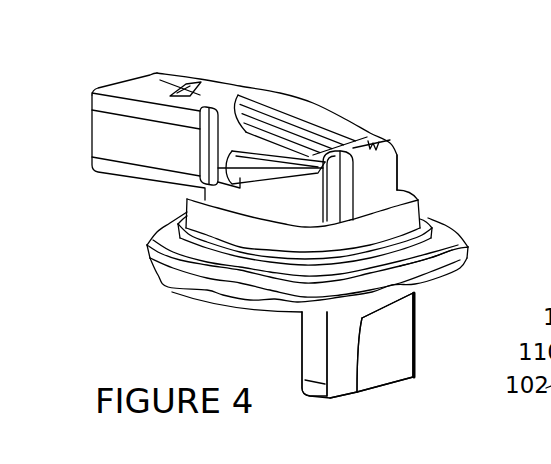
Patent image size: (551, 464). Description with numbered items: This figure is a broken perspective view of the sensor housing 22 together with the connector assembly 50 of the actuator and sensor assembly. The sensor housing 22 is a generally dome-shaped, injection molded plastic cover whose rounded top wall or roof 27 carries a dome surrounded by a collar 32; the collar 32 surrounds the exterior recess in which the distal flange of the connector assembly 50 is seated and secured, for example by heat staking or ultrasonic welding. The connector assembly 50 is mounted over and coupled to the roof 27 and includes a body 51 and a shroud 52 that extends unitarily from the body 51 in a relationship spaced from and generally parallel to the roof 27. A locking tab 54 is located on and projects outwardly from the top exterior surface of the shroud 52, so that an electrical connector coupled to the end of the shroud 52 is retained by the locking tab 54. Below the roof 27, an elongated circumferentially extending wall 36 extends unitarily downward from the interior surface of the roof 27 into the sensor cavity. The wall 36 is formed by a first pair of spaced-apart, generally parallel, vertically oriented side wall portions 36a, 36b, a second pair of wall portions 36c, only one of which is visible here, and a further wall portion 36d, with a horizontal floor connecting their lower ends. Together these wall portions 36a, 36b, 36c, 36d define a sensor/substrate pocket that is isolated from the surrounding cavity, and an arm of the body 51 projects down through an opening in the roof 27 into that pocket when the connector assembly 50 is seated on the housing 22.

The connector assembly 50 is at (247, 87).
The body 51 is at (383, 167).
The shroud 52 is at (160, 80).
The locking tab 54 is at (193, 81).
The collar 32 is at (408, 195).
The sensor housing 22 is at (440, 218).
The roof 27 is at (445, 240).
The circumferentially extending wall 36 is at (353, 367).
The side wall portion 36a is at (395, 360).
The side wall portion 36b is at (302, 353).
The wall portion 36c is at (317, 378).
The wall portion 36d is at (352, 400).